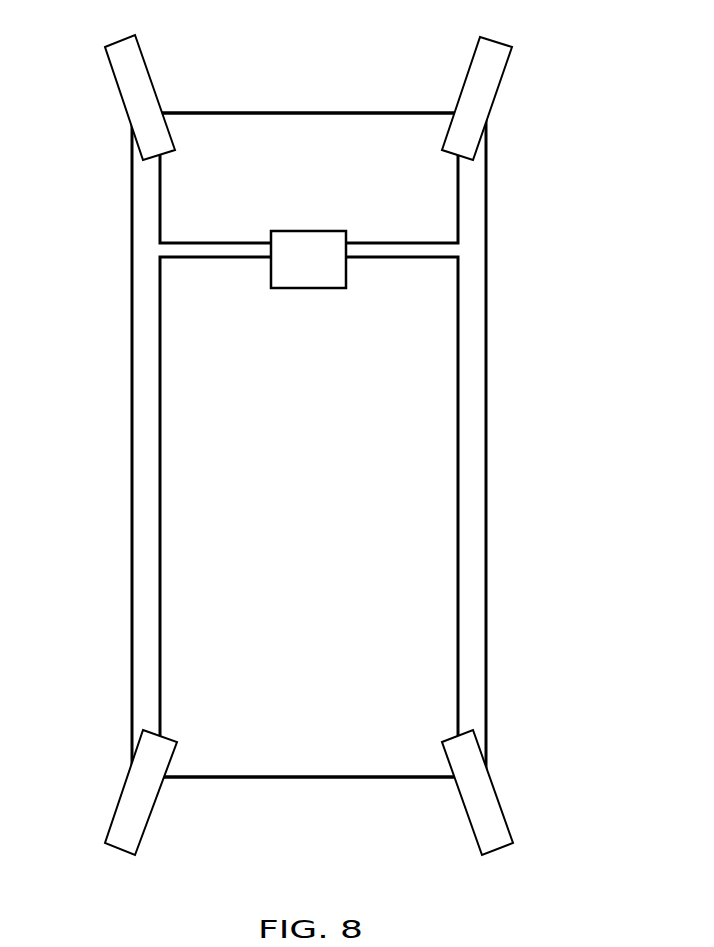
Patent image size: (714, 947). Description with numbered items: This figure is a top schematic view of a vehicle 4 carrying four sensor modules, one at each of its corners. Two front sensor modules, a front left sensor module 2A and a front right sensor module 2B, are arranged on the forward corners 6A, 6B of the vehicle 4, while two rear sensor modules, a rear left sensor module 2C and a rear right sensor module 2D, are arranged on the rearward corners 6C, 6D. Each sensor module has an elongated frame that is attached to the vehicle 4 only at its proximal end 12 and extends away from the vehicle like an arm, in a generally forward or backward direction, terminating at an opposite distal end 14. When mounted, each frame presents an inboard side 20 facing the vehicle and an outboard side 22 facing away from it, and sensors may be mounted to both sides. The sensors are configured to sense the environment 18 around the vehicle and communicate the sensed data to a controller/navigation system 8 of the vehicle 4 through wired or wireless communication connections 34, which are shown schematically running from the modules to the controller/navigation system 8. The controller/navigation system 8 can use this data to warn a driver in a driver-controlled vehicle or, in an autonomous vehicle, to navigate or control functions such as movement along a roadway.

The environment 18 is at (308, 445).
The vehicle 4 is at (308, 445).
The wired or wireless communication connections 34 is at (213, 242).
The controller/navigation system 8 is at (308, 288).
The front left sensor module 2A is at (143, 63).
The front right sensor module 2B is at (477, 63).
The rear left sensor module 2C is at (138, 833).
The rear right sensor module 2D is at (478, 833).
The distal end 14 is at (308, 445).
The outboard side 22 is at (308, 446).
The inboard side 20 is at (303, 446).
The proximal end 12 is at (303, 446).
The forward right corner 6A is at (127, 108).
The forward left corner 6B is at (491, 112).
The rearward right corner 6C is at (113, 783).
The rearward left corner 6D is at (497, 783).